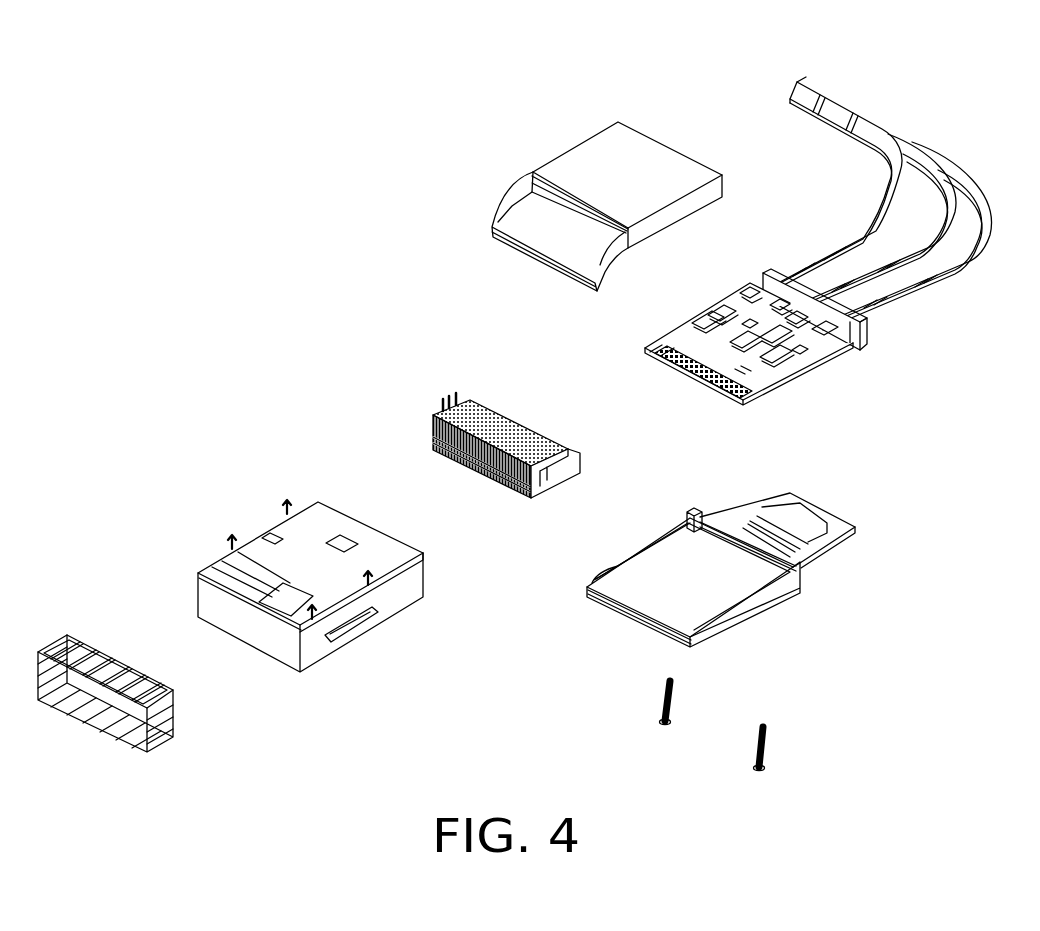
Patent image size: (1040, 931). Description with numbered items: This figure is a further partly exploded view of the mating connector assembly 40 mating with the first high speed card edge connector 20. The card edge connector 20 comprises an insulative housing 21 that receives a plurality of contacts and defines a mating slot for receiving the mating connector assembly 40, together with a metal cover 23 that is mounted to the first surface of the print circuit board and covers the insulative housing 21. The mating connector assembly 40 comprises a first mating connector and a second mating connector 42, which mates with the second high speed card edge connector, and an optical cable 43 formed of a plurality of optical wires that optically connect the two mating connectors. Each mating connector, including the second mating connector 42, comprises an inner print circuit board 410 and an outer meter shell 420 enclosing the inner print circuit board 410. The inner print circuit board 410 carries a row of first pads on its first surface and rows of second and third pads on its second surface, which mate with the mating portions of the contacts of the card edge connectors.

The first high speed card edge connector 20 is at (319, 568).
The insulative housing 21 is at (555, 477).
The metal cover 23 is at (394, 588).
The mating connector assembly 40 is at (884, 208).
The second mating connector 42 is at (598, 162).
The optical cable 43 is at (874, 124).
The inner print circuit board 410 is at (810, 342).
The outer meter shell 420 is at (737, 611).